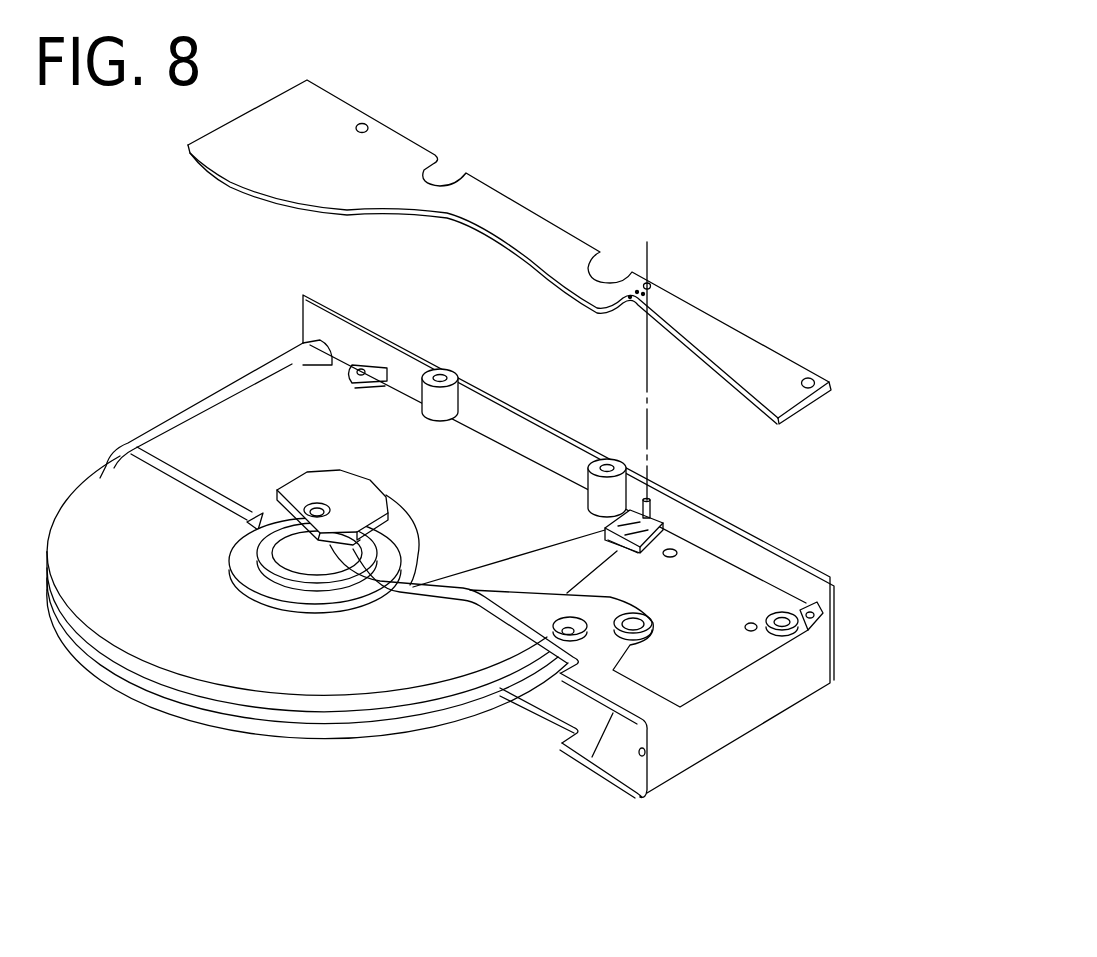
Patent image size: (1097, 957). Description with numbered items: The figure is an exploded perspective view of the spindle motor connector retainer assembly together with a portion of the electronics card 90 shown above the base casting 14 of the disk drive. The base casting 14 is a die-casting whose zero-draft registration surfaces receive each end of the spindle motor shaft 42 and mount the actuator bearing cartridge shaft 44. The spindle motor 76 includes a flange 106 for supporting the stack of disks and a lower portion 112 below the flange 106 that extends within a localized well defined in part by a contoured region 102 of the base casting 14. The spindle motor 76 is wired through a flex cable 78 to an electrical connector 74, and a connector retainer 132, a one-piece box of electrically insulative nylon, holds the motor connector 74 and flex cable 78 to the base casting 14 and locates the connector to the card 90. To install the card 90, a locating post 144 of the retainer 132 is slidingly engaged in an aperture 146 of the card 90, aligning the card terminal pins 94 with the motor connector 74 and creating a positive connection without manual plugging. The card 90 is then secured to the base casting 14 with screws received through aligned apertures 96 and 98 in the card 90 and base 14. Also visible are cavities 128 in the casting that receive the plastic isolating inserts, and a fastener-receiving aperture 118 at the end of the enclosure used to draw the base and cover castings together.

The base casting 14 is at (750, 713).
The spindle motor shaft 42 is at (326, 505).
The actuator bearing cartridge shaft 44 is at (562, 631).
The electrical connector 74 is at (612, 526).
The spindle motor 76 is at (260, 564).
The flex cable 78 is at (522, 566).
The electronics card 90 is at (363, 102).
The terminal pins 94 is at (629, 312).
The apertures 96 is at (368, 125).
The apertures 98 is at (368, 366).
The region 102 is at (248, 520).
The flange 106 is at (287, 584).
The lower portion 112 is at (337, 571).
The aperture 118 is at (650, 760).
The cavities 128 is at (450, 374).
The connector retainer 132 is at (660, 536).
The locating post 144 is at (652, 505).
The aperture 146 is at (653, 284).